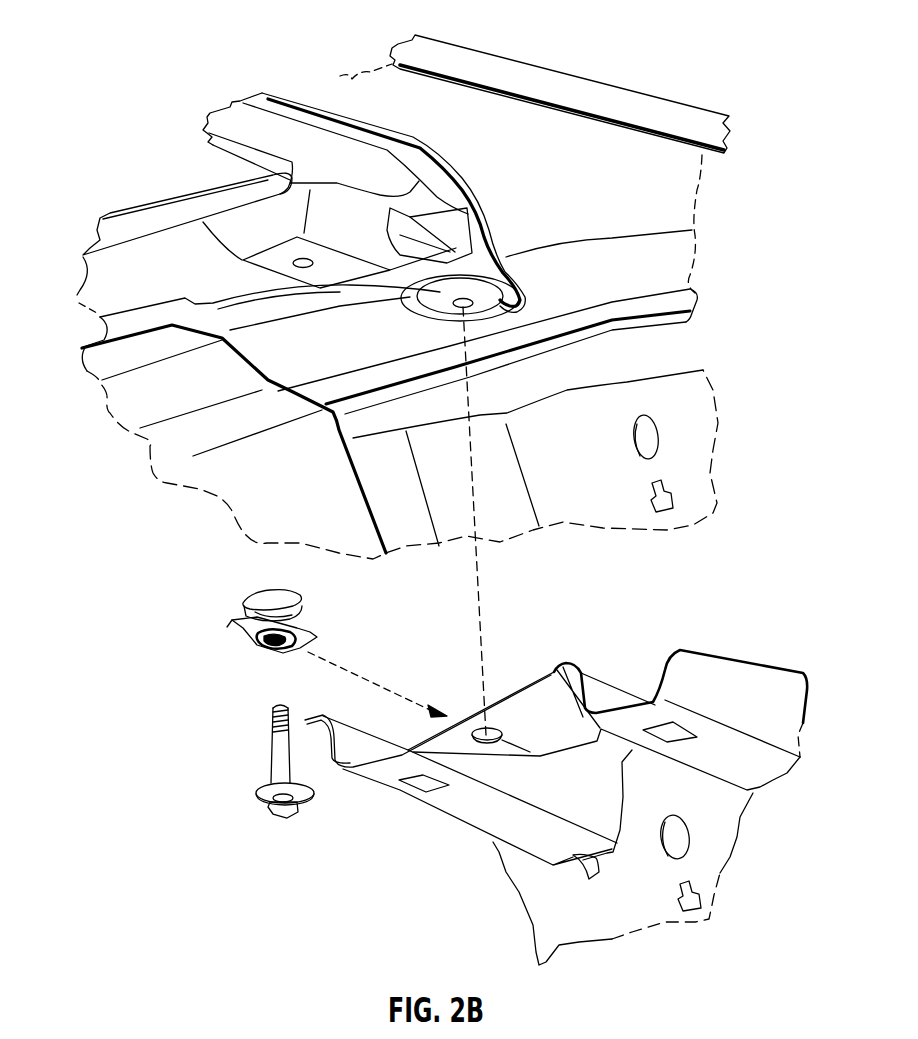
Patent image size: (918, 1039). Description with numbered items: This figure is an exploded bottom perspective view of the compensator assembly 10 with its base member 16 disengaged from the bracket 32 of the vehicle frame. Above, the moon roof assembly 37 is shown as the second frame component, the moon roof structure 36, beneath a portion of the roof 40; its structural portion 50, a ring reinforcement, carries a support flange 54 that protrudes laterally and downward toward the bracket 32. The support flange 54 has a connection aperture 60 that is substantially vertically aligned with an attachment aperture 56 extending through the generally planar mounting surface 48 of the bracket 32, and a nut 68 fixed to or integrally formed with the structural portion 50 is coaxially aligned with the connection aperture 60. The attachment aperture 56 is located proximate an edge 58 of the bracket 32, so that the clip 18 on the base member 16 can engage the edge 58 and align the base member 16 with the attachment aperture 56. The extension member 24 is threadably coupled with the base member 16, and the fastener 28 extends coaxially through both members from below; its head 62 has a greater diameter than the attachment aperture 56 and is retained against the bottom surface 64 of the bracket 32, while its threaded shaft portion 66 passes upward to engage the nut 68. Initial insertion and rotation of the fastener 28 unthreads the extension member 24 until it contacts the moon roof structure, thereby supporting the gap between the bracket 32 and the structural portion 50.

The compensator assembly 10 is at (279, 632).
The base member 16 is at (305, 612).
The clip 18 is at (243, 636).
The extension member 24 is at (253, 596).
The fastener 28 is at (251, 785).
The bracket 32 is at (728, 828).
The moon roof structure 36 is at (281, 110).
The moon roof assembly 37 is at (148, 186).
The roof 40 is at (432, 101).
The mounting surface 48 is at (556, 770).
The structural portion 50 is at (81, 289).
The support flange 54 is at (457, 267).
The attachment aperture 56 is at (488, 762).
The edge 58 is at (452, 740).
The connection aperture 60 is at (470, 310).
The head 62 is at (260, 806).
The bottom surface 64 is at (516, 741).
The threaded shaft portion 66 is at (270, 715).
The nut 68 is at (478, 297).